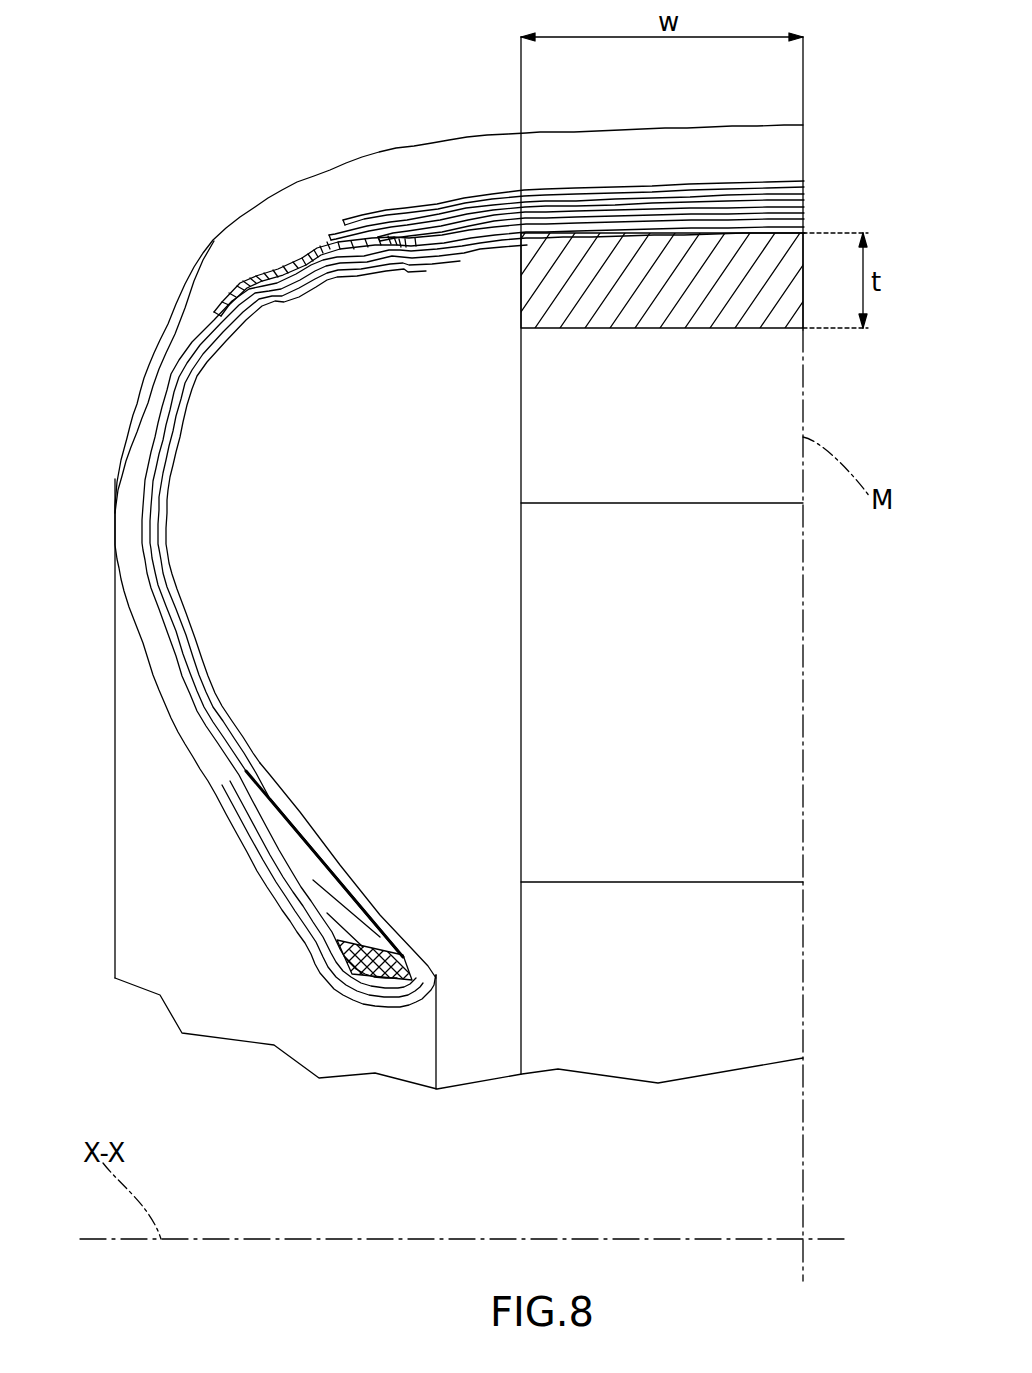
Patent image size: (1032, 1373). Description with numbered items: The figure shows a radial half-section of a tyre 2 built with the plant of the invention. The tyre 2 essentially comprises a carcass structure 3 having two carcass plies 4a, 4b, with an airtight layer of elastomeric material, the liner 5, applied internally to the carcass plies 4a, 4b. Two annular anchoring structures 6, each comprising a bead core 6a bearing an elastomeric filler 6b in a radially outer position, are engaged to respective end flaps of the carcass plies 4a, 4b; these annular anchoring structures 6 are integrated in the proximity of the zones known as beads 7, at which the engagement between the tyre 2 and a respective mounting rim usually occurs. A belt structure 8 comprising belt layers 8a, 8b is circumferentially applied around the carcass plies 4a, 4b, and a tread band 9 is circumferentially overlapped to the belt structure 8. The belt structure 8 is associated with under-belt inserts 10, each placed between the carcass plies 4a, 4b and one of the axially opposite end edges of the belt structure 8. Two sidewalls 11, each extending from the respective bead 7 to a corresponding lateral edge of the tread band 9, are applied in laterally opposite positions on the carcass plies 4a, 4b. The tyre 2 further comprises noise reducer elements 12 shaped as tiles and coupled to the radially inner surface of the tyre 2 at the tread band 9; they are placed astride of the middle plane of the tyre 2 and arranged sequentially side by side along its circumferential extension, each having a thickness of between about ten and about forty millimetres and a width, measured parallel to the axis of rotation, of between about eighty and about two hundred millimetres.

The tyre 2 is at (142, 118).
The carcass structure 3 is at (132, 495).
The carcass ply 4a is at (223, 730).
The carcass ply 4b is at (200, 718).
The liner 5 is at (323, 290).
The annular anchoring structure 6 is at (348, 855).
The bead core 6a is at (420, 953).
The elastomeric filler 6b is at (313, 875).
The bead 7 is at (424, 897).
The belt structure 8 is at (754, 168).
The belt layer 8a is at (413, 212).
The belt layer 8b is at (483, 205).
The tread band 9 is at (645, 157).
The under-belt insert 10 is at (283, 263).
The sidewall 11 is at (136, 424).
The noise reducer element 12 is at (677, 422).